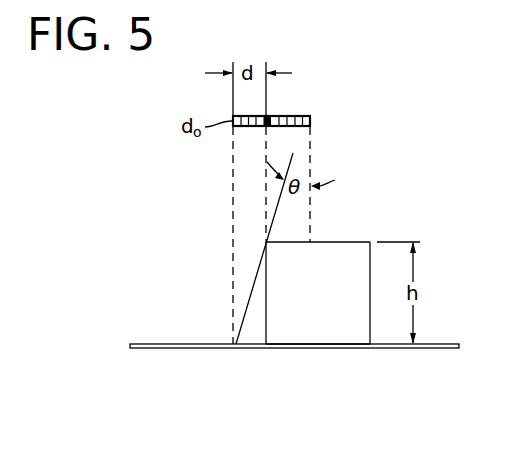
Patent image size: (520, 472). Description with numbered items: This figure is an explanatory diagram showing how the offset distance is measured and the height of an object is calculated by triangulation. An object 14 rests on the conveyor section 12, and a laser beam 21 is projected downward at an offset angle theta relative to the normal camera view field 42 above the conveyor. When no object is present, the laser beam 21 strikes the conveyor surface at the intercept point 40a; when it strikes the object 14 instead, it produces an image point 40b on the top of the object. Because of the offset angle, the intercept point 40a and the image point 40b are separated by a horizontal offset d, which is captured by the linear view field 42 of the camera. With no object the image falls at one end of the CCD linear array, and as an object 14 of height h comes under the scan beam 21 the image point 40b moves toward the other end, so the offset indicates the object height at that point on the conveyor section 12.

The conveyor section 12 is at (457, 348).
The object 14 is at (313, 333).
The laser beam 21 is at (277, 210).
The intercept point 40a is at (236, 343).
The image point 40b is at (266, 243).
The linear view field 42 is at (311, 121).